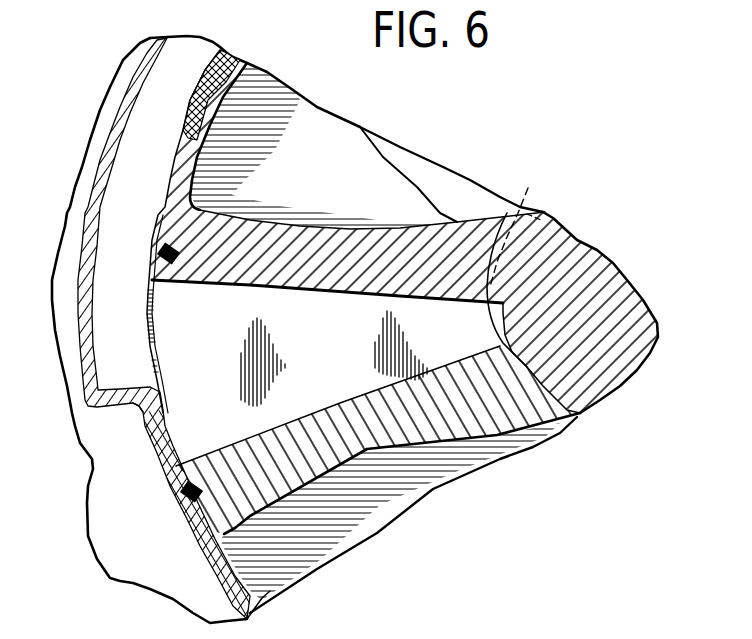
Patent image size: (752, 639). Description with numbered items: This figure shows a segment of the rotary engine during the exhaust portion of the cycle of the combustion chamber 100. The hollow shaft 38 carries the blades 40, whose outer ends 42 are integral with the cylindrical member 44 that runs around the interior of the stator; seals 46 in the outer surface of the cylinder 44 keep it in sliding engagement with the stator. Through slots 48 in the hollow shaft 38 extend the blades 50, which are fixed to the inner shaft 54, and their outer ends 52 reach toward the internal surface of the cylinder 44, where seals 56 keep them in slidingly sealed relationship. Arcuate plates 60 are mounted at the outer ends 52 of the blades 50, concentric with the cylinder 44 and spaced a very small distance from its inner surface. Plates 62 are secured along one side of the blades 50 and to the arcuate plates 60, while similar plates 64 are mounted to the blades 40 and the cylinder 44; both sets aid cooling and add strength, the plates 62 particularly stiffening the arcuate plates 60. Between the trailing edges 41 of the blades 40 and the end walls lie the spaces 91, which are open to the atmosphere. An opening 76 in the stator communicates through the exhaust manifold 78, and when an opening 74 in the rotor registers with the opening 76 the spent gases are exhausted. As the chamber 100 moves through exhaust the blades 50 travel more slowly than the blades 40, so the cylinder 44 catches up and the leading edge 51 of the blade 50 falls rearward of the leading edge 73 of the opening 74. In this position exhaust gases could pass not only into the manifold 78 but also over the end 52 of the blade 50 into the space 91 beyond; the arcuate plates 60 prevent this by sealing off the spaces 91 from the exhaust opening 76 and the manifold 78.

The hollow shaft 38 is at (515, 224).
The blades 40 is at (378, 438).
The trailing edges of the blades 41 is at (391, 511).
The outer ends of the blades 42 is at (260, 545).
The cylindrical member 44 is at (285, 602).
The seals 46 is at (151, 515).
The slots 48 is at (500, 313).
The blades 50 is at (404, 231).
The leading edges of the blades 51 is at (367, 146).
The outer ends of the blades 52 is at (339, 305).
The shaft 54 is at (613, 312).
The seals 56 is at (140, 249).
The arcuate plates 60 is at (255, 81).
The plates 62 is at (405, 159).
The plates 64 is at (413, 515).
The leading edge of the opening 73 is at (184, 99).
The openings 74 is at (121, 426).
The opening 76 is at (160, 231).
The exhaust manifold 78 is at (144, 330).
The spaces 91 is at (451, 167).
The combustion chamber 100 is at (345, 357).